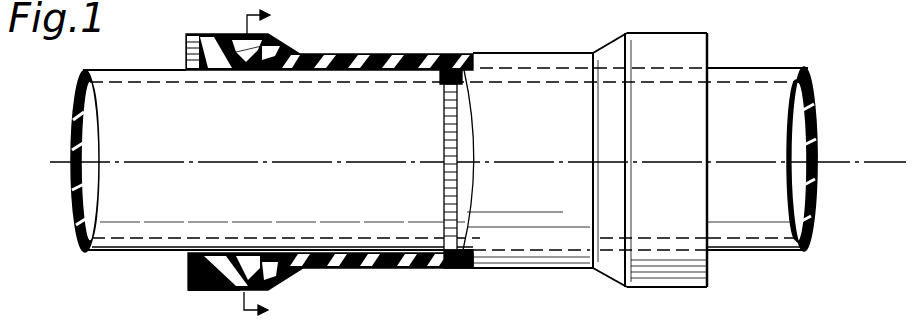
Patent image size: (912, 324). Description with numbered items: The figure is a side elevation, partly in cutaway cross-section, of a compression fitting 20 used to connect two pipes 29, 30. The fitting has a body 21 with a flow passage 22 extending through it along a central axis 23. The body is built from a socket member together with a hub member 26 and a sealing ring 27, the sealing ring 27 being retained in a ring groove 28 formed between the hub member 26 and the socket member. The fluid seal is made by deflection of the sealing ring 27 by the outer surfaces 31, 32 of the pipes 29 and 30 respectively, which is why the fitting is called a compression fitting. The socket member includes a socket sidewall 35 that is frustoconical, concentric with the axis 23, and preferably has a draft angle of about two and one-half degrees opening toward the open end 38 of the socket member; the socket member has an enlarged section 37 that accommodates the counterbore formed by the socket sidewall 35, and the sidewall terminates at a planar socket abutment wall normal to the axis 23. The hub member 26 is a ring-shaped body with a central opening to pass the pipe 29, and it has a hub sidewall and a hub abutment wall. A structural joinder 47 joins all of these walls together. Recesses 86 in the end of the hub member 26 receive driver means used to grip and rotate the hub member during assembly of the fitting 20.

The fitting 20 is at (412, 19).
The body 21 is at (493, 53).
The flow passage 22 is at (425, 250).
The central axis 23 is at (61, 166).
The hub member 26 is at (180, 276).
The sealing ring 27 is at (268, 55).
The ring groove 28 is at (243, 257).
The pipe 29 is at (117, 70).
The pipe 30 is at (763, 66).
The outer surface 31 is at (104, 254).
The outer surface 32 is at (739, 253).
The socket sidewall 35 is at (213, 298).
The enlarged section 37 is at (288, 274).
The open end 38 is at (190, 287).
The structural joinder 47 is at (243, 44).
The recesses 86 is at (186, 51).